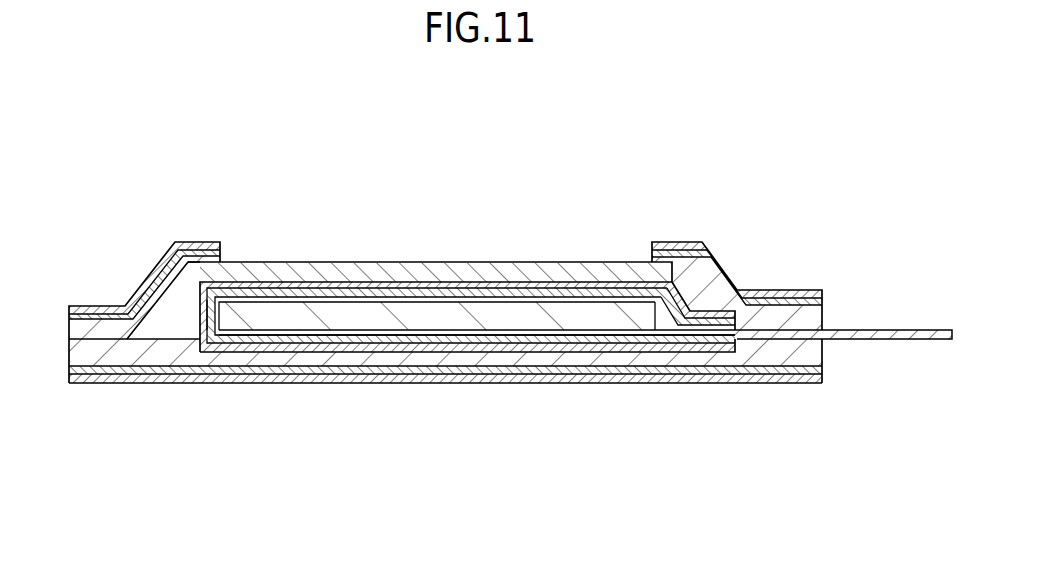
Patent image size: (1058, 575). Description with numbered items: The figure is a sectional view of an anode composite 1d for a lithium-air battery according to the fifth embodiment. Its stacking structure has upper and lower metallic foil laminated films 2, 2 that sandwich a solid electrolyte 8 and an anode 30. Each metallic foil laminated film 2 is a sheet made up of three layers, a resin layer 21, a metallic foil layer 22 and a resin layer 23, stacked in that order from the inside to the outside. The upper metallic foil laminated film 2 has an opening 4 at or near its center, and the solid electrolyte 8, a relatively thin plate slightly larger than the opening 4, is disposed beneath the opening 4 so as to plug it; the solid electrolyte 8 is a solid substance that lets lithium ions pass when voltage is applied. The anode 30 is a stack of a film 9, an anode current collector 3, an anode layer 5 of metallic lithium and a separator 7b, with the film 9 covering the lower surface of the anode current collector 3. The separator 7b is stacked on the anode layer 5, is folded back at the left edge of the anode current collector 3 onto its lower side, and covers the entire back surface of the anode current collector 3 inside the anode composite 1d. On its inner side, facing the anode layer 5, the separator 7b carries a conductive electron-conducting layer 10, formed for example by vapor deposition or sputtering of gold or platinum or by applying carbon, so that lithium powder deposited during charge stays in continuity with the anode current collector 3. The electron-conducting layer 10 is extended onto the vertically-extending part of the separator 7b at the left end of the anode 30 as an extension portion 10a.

The anode composite 1d is at (775, 183).
The metallic foil laminated film 2 is at (103, 143).
The resin layer 21 is at (100, 325).
The metallic foil layer 22 is at (198, 243).
The resin layer 23 is at (224, 243).
The anode 30 is at (512, 170).
The anode current collector 3 is at (492, 332).
The opening 4 is at (652, 256).
The anode layer 5 is at (270, 318).
The separator 7b is at (330, 299).
The solid electrolyte 8 is at (592, 262).
The film 9 is at (414, 343).
The electron-conducting layer 10 is at (388, 293).
The extension portion 10a is at (207, 318).